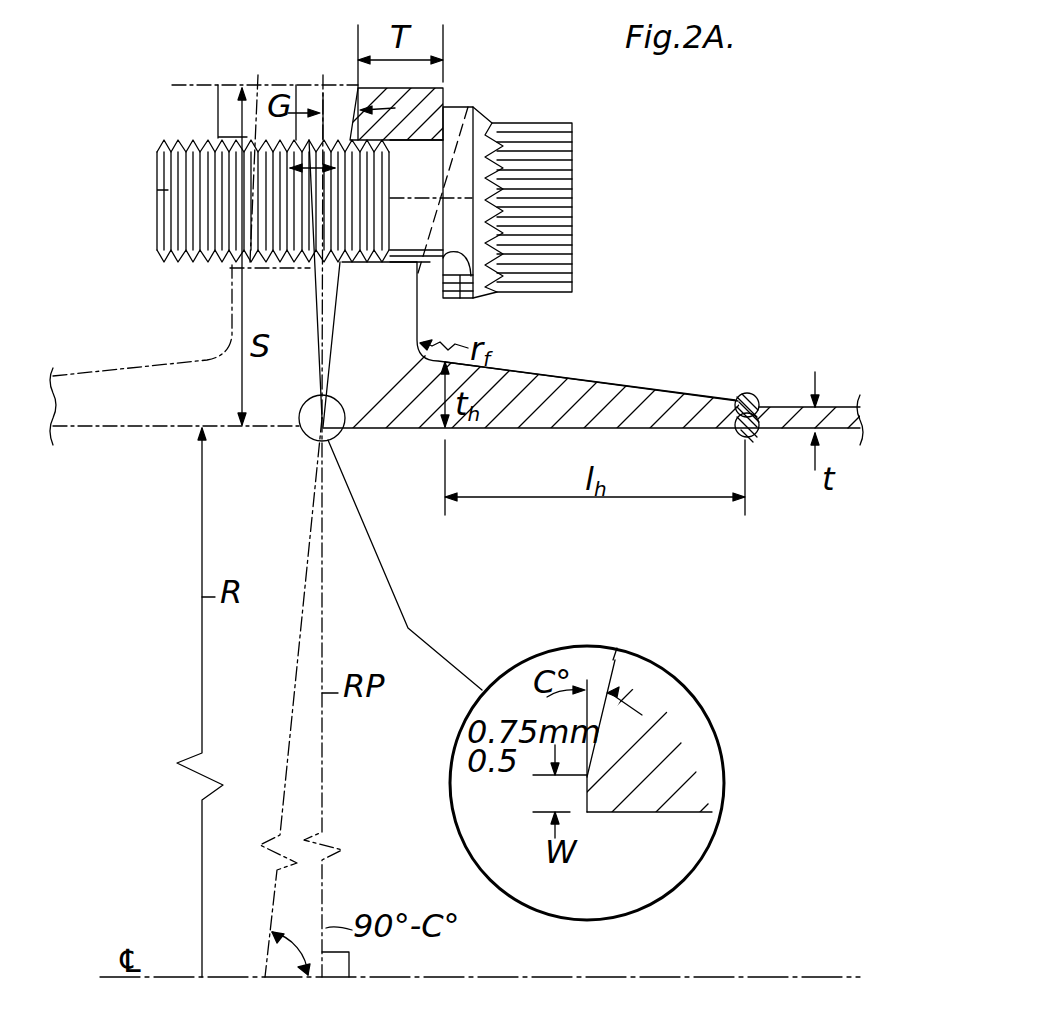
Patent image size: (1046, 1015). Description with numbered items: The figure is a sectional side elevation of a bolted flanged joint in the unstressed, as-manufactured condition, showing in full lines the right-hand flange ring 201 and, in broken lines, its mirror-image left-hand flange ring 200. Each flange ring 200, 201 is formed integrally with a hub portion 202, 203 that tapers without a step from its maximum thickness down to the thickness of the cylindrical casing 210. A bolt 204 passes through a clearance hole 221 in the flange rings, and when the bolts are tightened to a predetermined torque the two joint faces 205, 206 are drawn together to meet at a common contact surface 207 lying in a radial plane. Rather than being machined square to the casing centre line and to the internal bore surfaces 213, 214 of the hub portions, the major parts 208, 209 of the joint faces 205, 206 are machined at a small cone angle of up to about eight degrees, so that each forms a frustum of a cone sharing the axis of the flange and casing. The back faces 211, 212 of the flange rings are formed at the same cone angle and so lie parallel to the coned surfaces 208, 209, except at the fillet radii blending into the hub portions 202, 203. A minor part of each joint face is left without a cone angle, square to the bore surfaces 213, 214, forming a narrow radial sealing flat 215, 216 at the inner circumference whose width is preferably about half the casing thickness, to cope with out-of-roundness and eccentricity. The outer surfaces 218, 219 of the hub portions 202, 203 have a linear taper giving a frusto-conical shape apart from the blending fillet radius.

The flange ring 200 is at (203, 131).
The flange ring 201 is at (443, 88).
The hub portion 202 is at (90, 400).
The hub portion 203 is at (630, 407).
The bolt 204 is at (168, 192).
The joint face 205 is at (305, 280).
The joint face 206 is at (400, 285).
The common contact surface 207 is at (338, 56).
The major part of joint face 208 is at (310, 303).
The major part of joint face 209 is at (338, 328).
The cylindrical casing 210 is at (777, 417).
The back face 211 is at (218, 115).
The back face 212 is at (476, 122).
The internal bore surface 213 is at (152, 428).
The internal bore surface 214 is at (367, 430).
The sealing flat 215 is at (310, 414).
The sealing flat 216 is at (330, 410).
The outer surface of hub portion 218 is at (135, 360).
The outer surface of hub portion 219 is at (577, 380).
The clearance hole 221 is at (258, 75).